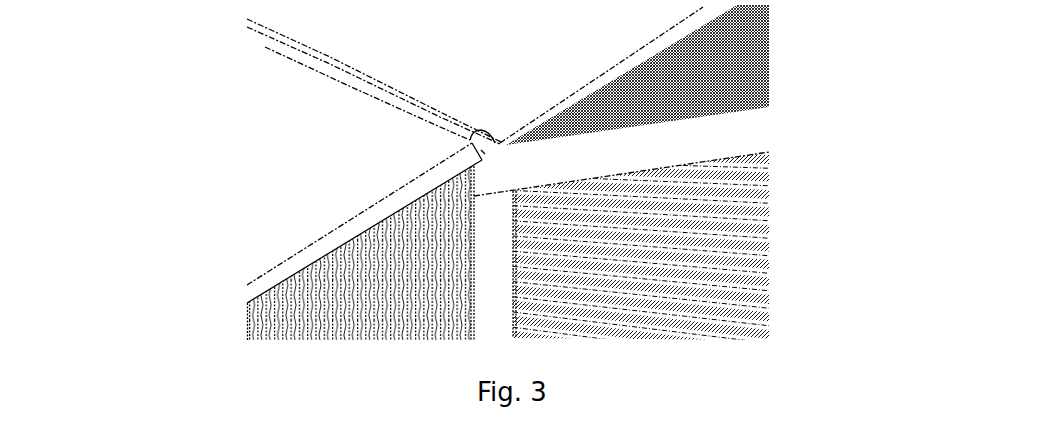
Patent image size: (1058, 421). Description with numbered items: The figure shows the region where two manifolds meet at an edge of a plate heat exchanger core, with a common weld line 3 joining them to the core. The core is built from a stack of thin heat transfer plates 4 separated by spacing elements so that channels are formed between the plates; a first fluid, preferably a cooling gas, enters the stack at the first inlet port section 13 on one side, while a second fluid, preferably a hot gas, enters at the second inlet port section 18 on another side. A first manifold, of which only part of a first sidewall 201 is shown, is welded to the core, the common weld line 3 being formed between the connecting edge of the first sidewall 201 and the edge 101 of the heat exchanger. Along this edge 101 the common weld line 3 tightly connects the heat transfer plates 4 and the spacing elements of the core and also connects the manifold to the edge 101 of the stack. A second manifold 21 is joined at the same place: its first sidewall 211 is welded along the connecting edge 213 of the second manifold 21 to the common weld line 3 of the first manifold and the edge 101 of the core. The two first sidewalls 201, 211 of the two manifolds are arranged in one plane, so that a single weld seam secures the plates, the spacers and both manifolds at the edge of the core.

The common weld line 3 is at (273, 44).
The connecting edge 213 is at (345, 86).
The first sidewall 201 is at (487, 60).
The first inlet port section 13 is at (736, 60).
The first sidewall 211 is at (317, 179).
The second manifold 21 is at (257, 237).
The second inlet port section 18 is at (418, 303).
The heat transfer plates 4 is at (740, 227).
The edge of the heat exchanger 101 is at (483, 152).